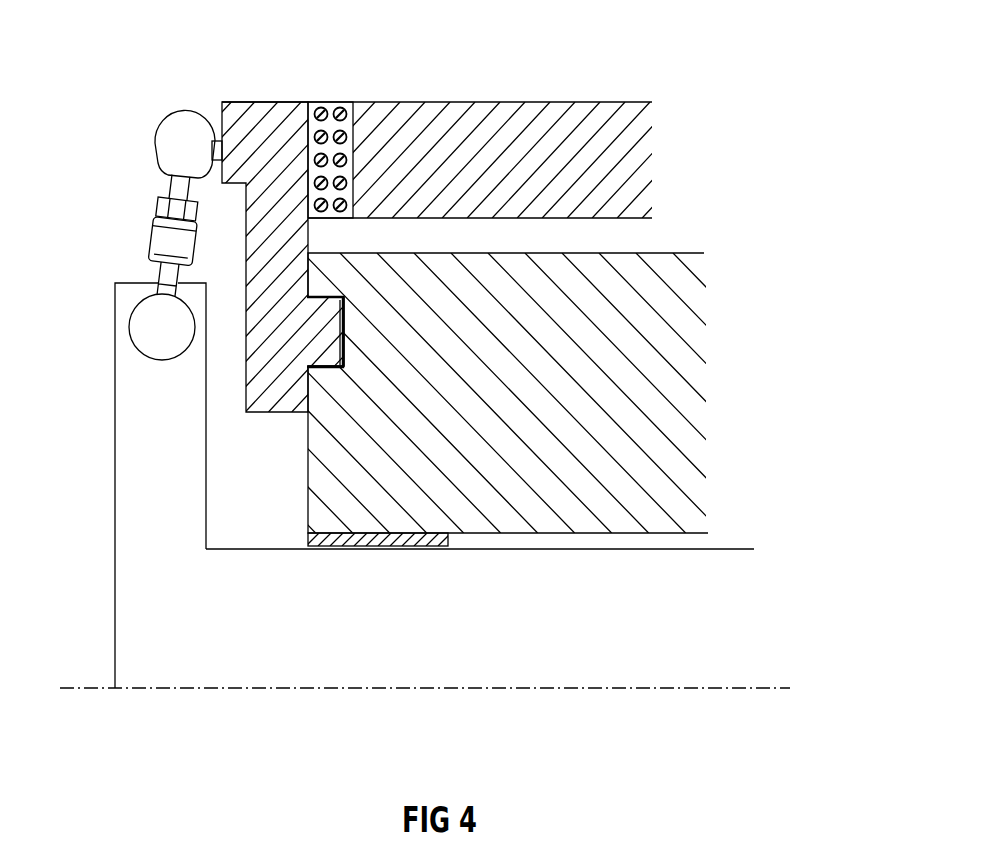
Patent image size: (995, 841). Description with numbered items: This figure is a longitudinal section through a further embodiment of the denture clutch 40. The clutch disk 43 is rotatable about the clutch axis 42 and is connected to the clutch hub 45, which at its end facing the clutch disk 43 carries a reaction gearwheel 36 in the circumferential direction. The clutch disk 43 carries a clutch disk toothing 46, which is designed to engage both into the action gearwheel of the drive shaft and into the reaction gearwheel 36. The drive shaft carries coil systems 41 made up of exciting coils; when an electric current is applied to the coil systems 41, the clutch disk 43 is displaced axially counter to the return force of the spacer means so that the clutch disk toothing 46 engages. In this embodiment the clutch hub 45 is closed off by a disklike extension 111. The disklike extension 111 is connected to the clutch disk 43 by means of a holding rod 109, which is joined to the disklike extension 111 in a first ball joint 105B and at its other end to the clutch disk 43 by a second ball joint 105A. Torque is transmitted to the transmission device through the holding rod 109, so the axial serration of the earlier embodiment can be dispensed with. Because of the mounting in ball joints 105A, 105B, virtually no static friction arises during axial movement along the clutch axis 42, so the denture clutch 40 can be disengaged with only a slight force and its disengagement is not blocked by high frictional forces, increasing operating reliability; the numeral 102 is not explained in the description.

The denture clutch 40 is at (252, 101).
The coil systems 41 is at (328, 118).
The clutch disk 43 is at (277, 143).
The clutch disk toothing 46 is at (344, 328).
The reaction gearwheel 36 is at (345, 332).
The clutch hub 45 is at (637, 577).
The disklike extension 111 is at (135, 472).
The clutch axis 42 is at (393, 688).
The second ball joint 105A is at (175, 142).
The linkage rod 102 is at (169, 193).
The holding rod 109 is at (165, 240).
The first ball joint 105B is at (145, 324).